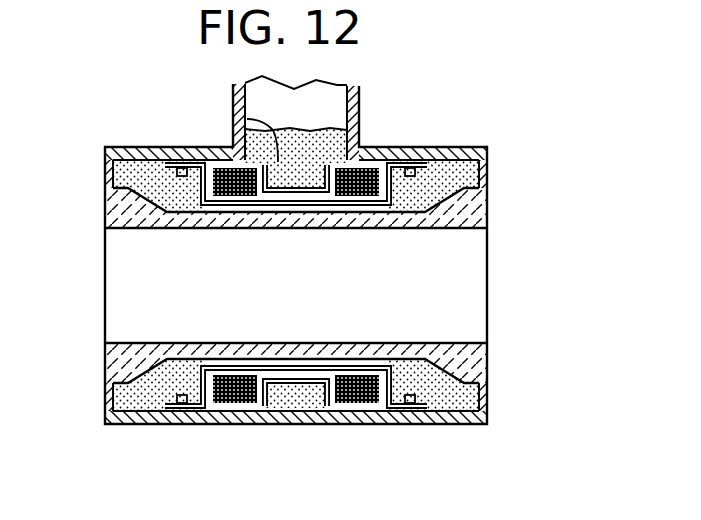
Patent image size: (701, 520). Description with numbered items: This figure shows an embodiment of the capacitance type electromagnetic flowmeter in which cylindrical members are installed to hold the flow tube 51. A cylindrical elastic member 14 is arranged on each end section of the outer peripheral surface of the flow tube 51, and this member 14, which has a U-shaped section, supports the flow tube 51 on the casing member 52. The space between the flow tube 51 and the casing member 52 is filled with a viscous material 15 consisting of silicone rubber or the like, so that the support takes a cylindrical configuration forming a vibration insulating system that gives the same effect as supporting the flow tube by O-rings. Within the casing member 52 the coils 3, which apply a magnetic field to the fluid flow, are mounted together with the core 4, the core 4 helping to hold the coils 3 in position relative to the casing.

The coils 3 is at (225, 167).
The core 4 is at (233, 117).
The cylindrical elastic member 14 is at (490, 182).
The viscous material 15 is at (463, 175).
The flow tube 51 is at (483, 217).
The casing member 52 is at (424, 147).